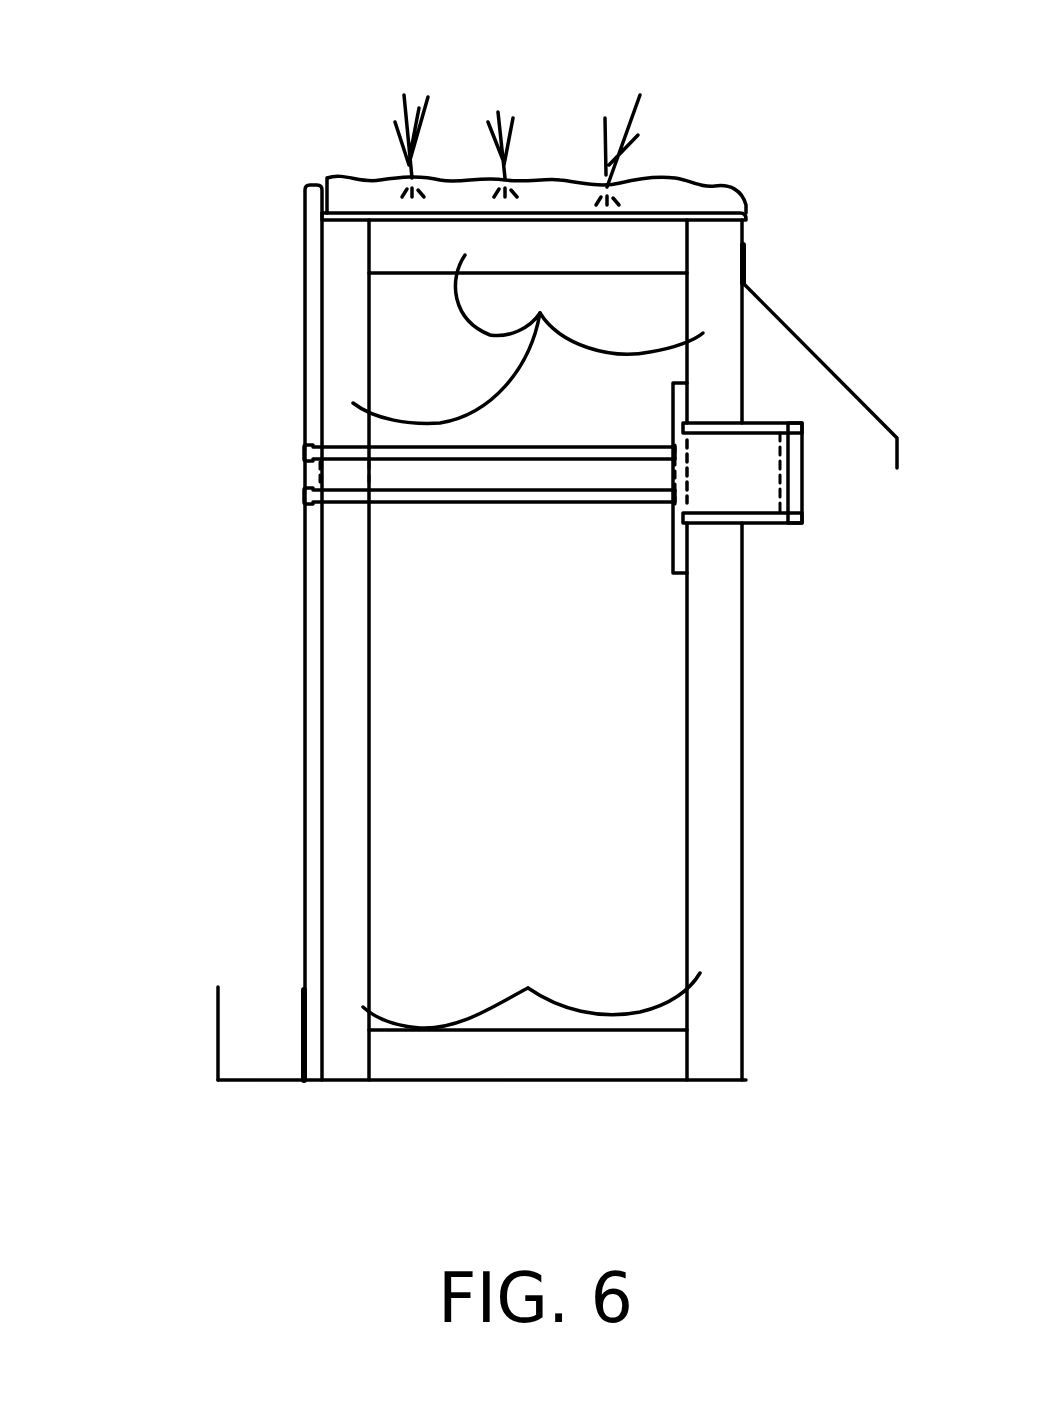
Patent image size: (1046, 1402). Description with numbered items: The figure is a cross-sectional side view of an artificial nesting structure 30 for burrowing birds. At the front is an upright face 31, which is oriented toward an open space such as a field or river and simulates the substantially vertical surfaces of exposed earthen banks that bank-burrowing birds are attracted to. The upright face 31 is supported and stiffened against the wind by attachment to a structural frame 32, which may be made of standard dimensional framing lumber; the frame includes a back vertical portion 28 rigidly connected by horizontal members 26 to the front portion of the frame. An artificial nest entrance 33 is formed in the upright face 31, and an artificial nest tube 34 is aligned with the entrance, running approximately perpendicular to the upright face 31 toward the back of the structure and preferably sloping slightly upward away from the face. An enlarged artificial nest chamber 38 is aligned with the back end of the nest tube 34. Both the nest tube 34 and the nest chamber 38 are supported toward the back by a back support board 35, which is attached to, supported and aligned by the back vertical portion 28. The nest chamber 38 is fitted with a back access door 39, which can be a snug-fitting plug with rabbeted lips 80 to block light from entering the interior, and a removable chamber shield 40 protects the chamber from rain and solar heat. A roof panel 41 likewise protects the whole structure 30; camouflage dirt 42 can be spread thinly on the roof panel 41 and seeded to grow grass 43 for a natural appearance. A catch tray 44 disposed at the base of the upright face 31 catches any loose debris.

The horizontal members 26 is at (562, 240).
The back vertical portion 28 is at (720, 762).
The artificial nesting structure 30 is at (167, 1093).
The upright face 31 is at (315, 727).
The structural frame 32 is at (507, 1058).
The artificial nest entrance 33 is at (291, 443).
The artificial nest tube 34 is at (477, 503).
The back support board 35 is at (683, 561).
The artificial nest chamber 38 is at (762, 493).
The back access door 39 is at (803, 483).
The removable chamber shield 40 is at (820, 350).
The roof panel 41 is at (768, 252).
The camouflage dirt 42 is at (665, 197).
The grass 43 is at (594, 105).
The catch tray 44 is at (213, 1063).
The rabbeted lips 80 is at (753, 422).